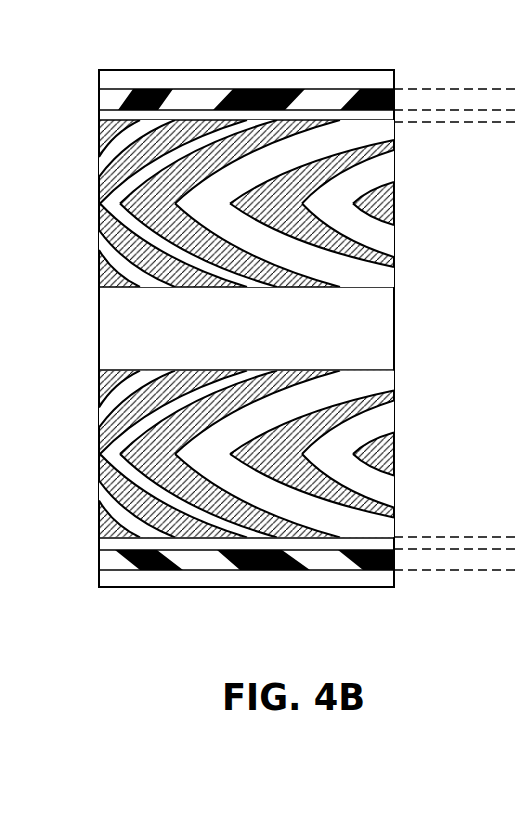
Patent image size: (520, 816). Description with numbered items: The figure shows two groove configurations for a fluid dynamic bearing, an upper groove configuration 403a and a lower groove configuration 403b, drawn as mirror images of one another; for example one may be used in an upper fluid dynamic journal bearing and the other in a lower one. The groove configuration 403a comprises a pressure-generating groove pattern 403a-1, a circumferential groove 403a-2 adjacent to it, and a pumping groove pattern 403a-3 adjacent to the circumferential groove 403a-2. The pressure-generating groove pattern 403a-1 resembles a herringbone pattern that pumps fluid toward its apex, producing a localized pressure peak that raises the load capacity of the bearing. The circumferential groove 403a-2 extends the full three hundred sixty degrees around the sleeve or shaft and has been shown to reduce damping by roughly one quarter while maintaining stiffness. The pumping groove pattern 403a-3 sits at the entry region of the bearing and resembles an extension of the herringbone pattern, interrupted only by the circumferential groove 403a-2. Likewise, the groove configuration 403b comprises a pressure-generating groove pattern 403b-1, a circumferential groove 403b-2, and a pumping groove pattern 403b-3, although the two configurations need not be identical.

The groove configuration 403a is at (90, 92).
The pressure-generating groove pattern 403a-1 is at (393, 192).
The circumferential groove 403a-2 is at (387, 117).
The pumping groove pattern 403a-3 is at (362, 90).
The groove configuration 403b is at (90, 373).
The pressure-generating groove pattern 403b-1 is at (394, 437).
The circumferential groove 403b-2 is at (383, 543).
The pumping groove pattern 403b-3 is at (383, 555).